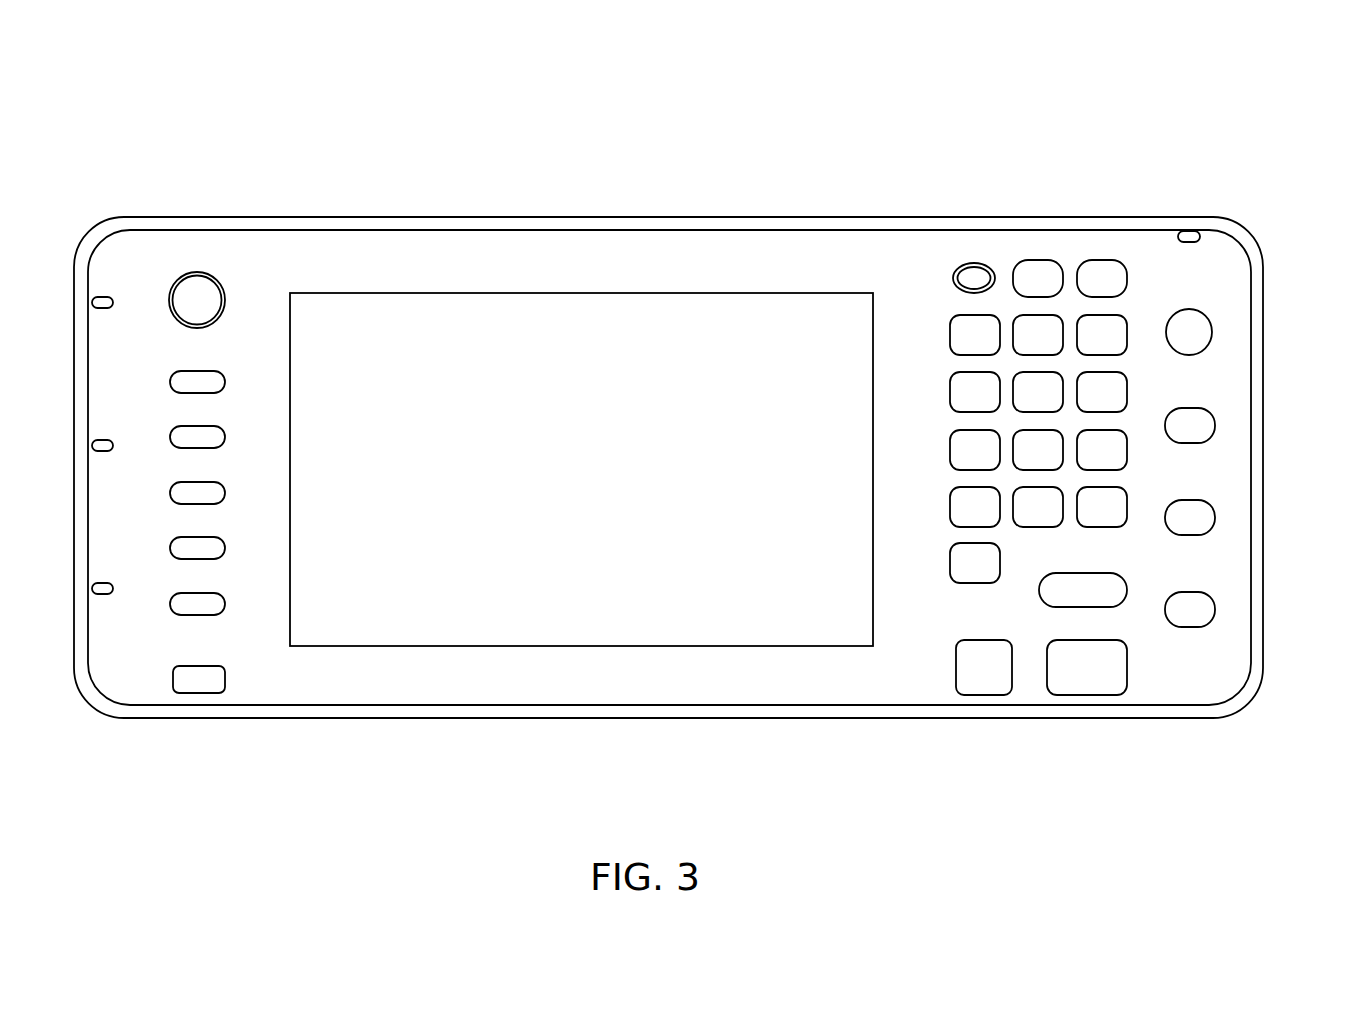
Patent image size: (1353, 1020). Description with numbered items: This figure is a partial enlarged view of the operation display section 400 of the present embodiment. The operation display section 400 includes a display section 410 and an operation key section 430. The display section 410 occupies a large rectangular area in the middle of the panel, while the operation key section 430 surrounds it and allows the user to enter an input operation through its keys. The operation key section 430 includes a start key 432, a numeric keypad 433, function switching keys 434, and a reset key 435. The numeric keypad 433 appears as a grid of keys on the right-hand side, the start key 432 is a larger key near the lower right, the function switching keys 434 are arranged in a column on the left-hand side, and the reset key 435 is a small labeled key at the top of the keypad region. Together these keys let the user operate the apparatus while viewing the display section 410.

The operation display section 400 is at (613, 137).
The display section 410 is at (722, 293).
The operation key section 430 is at (1207, 208).
The start key 432 is at (1093, 672).
The numeric keypad 433 is at (1155, 474).
The function switching keys 434 is at (248, 645).
The reset key 435 is at (996, 270).